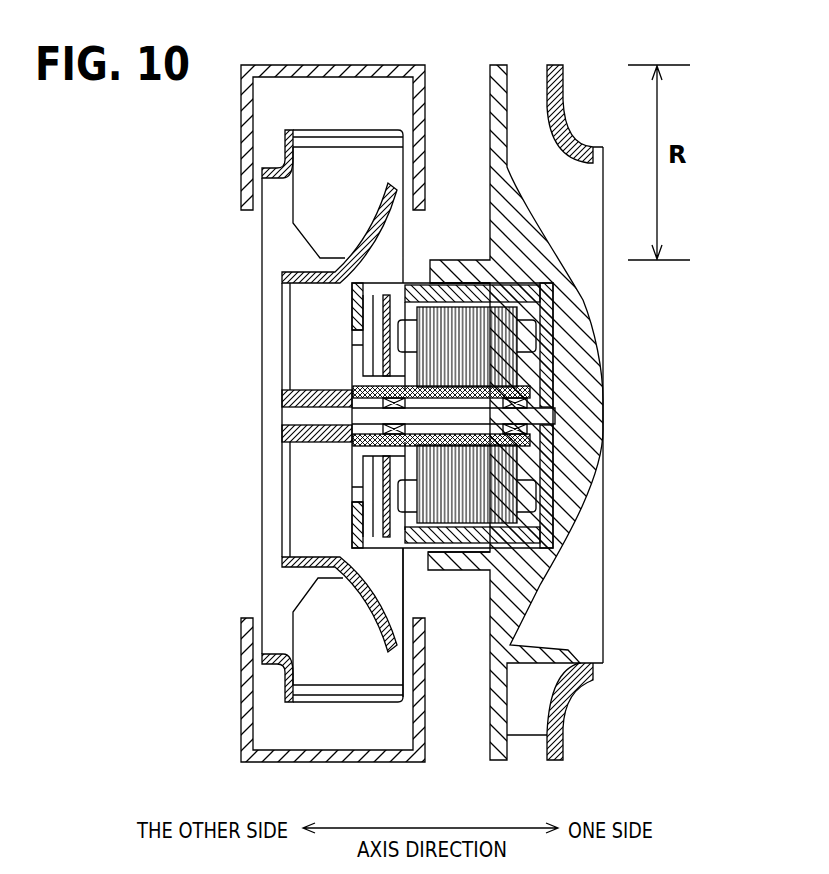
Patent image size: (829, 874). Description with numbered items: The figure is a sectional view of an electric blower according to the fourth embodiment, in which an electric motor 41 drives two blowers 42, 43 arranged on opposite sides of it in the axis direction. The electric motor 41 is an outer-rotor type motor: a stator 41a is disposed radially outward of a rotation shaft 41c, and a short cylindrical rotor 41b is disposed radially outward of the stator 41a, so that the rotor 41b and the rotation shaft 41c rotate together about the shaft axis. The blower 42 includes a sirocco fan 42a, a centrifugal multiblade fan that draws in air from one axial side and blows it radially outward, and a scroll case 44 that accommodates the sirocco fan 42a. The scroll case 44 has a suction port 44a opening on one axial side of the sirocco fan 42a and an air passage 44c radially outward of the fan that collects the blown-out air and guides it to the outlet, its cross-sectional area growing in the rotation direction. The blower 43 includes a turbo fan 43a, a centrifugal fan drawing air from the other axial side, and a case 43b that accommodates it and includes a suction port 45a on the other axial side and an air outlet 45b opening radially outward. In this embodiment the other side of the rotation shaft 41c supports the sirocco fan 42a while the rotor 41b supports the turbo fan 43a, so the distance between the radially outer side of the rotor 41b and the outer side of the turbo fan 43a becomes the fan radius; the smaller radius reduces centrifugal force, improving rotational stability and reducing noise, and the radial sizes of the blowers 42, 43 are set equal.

The electric motor 41 is at (506, 415).
The stator 41a is at (497, 470).
The rotor 41b is at (552, 523).
The rotation shaft 41c is at (547, 417).
The blower 42 is at (244, 417).
The sirocco fan 42a is at (282, 278).
The blower 43 is at (579, 412).
The turbo fan 43a is at (562, 545).
The case 43b is at (580, 694).
The scroll case 44 is at (262, 178).
The suction port 44a is at (262, 537).
The air passage 44c is at (318, 113).
The suction port 45a is at (583, 560).
The air outlet 45b is at (530, 88).